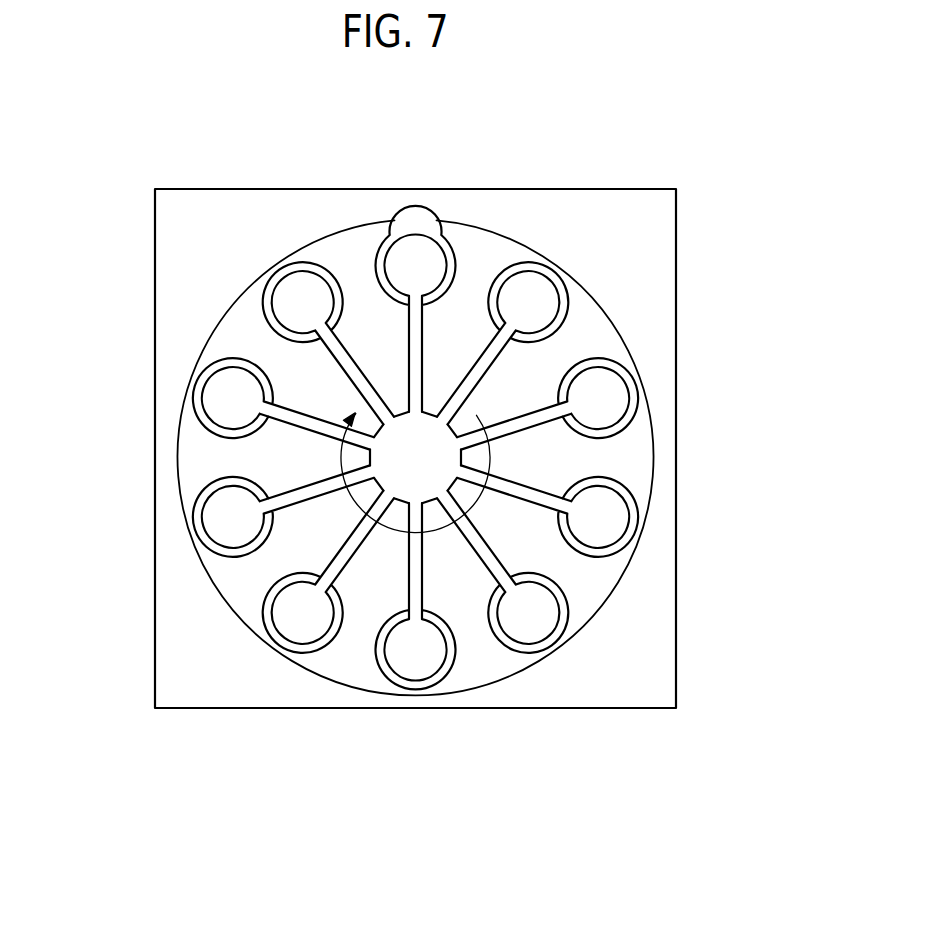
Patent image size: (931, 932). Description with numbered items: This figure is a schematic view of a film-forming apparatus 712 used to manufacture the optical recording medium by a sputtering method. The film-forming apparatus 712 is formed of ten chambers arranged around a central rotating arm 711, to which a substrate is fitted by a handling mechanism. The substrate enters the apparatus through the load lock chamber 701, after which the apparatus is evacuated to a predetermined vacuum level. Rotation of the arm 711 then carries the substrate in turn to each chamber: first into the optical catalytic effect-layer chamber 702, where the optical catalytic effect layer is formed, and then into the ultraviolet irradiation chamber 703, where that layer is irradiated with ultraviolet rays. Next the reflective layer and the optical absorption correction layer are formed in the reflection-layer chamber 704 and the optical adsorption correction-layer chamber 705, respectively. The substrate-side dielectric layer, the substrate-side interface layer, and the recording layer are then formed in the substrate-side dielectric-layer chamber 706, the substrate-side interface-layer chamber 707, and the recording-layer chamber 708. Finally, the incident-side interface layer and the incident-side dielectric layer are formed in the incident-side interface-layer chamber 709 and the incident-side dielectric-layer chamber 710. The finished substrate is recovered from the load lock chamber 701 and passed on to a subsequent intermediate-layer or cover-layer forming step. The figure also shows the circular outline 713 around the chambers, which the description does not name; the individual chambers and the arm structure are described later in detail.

The load lock chamber 701 is at (416, 206).
The optical catalytic effect-layer chamber 702 is at (569, 300).
The ultraviolet irradiation chamber 703 is at (639, 407).
The reflection-layer chamber 704 is at (636, 492).
The optical adsorption correction-layer chamber 705 is at (566, 590).
The substrate-side dielectric-layer chamber 706 is at (385, 677).
The substrate-side interface-layer chamber 707 is at (262, 610).
The recording-layer chamber 708 is at (198, 494).
The incident-side interface-layer chamber 709 is at (222, 367).
The incident-side dielectric-layer chamber 710 is at (254, 292).
The arm 711 is at (432, 428).
The film-forming apparatus 712 is at (237, 193).
The rotating disc 713 is at (517, 672).